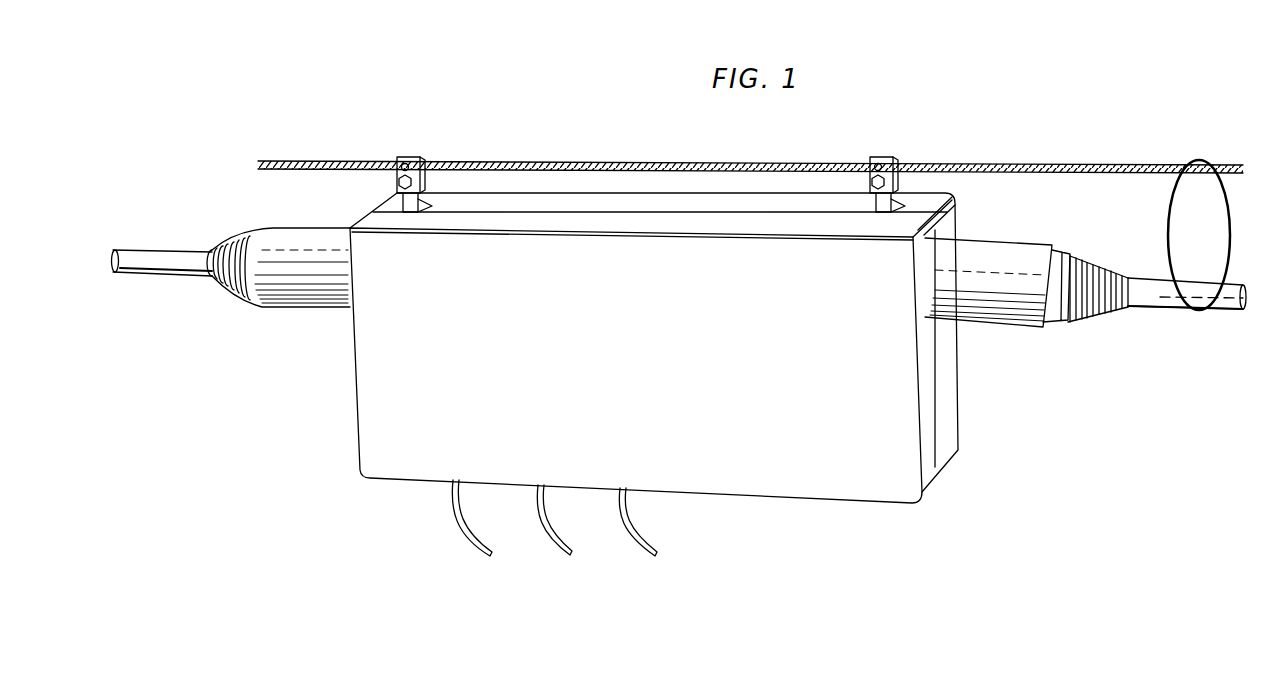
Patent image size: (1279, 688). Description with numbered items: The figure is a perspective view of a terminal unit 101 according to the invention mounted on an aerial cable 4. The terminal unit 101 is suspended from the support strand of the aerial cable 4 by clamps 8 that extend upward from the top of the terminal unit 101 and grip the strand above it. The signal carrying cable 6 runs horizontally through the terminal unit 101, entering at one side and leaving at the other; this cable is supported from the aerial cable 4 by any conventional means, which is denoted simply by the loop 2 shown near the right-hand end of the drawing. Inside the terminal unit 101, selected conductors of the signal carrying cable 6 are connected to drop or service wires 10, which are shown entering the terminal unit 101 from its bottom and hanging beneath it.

The loop 2 is at (1200, 158).
The aerial cable 4 is at (1060, 160).
The signal carrying cable 6 is at (1153, 296).
The clamps 8 is at (411, 155).
The drop or service wires 10 is at (563, 553).
The terminal unit 101 is at (372, 392).